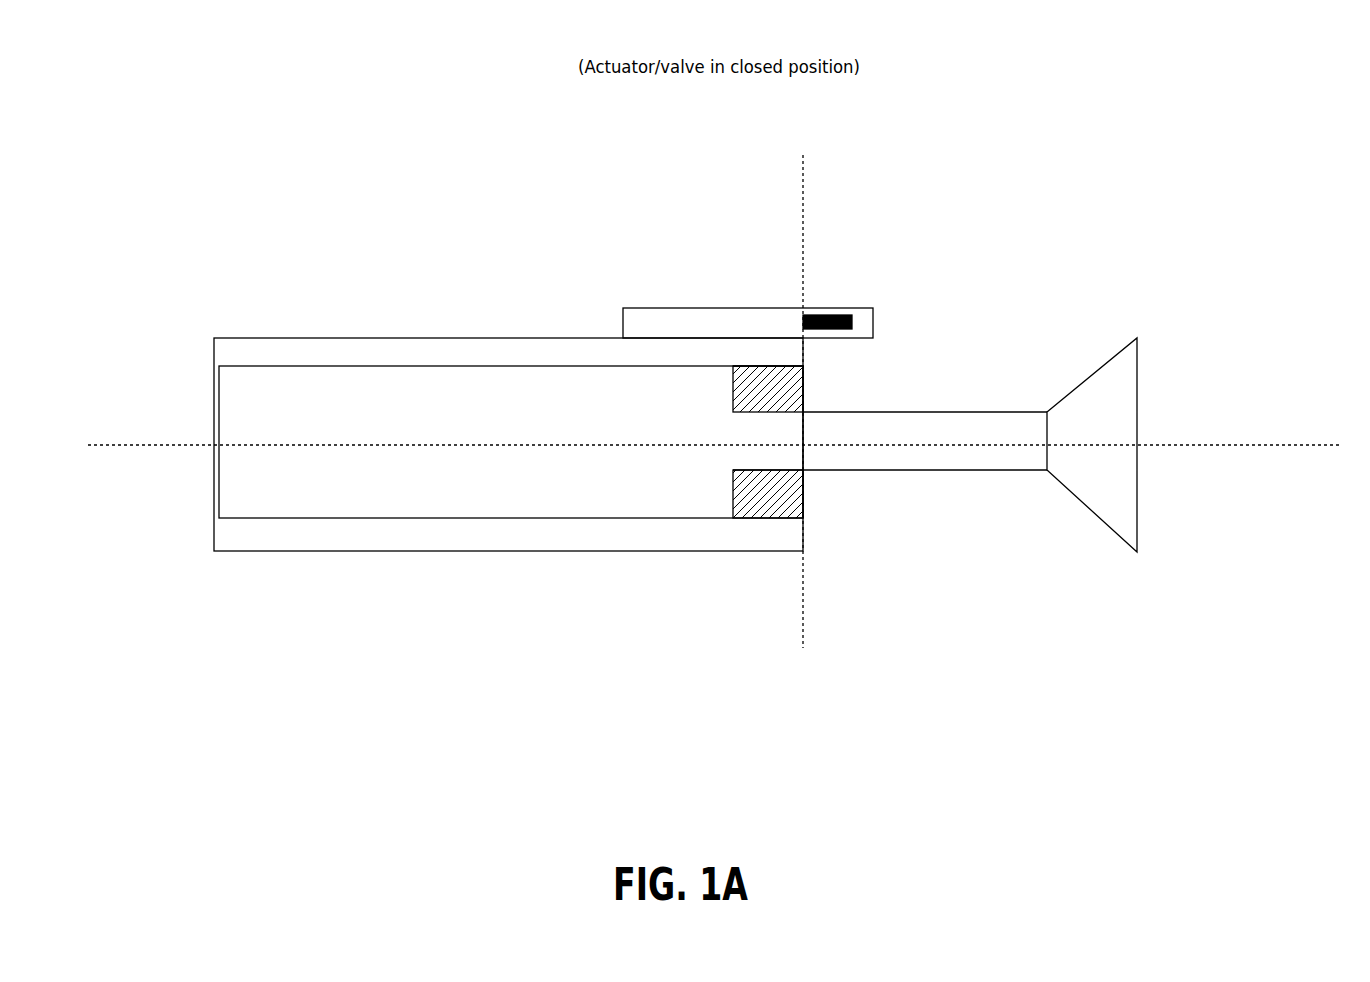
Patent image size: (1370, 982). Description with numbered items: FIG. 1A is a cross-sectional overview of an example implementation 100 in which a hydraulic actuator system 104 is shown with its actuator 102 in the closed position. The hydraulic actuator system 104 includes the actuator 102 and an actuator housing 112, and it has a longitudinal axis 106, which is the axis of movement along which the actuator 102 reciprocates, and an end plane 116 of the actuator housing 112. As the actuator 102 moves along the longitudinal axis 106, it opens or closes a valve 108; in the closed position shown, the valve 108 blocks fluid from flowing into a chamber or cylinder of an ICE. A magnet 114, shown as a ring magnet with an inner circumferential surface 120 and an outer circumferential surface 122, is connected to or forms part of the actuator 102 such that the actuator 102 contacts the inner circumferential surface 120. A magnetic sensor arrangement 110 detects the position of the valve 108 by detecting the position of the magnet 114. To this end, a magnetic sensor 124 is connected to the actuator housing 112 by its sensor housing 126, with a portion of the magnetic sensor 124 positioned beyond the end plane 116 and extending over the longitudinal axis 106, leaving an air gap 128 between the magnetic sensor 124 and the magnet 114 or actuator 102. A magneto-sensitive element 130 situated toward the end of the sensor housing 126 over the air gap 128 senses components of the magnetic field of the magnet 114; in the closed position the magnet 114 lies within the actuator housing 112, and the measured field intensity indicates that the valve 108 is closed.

The example implementation 100 is at (184, 44).
The actuator 102 is at (367, 486).
The hydraulic actuator system 104 is at (360, 243).
The longitudinal axis 106 is at (1309, 544).
The valve 108 is at (1137, 368).
The magnetic sensor arrangement 110 is at (790, 277).
The actuator housing 112 is at (352, 323).
The magnet 114 is at (773, 413).
The end plane 116 is at (803, 197).
The inner circumferential surface 120 is at (733, 471).
The outer circumferential surface 122 is at (733, 370).
The magnetic sensor 124 is at (709, 279).
The sensor housing 126 is at (703, 300).
The air gap 128 is at (988, 361).
The magneto-sensitive element 130 is at (897, 290).